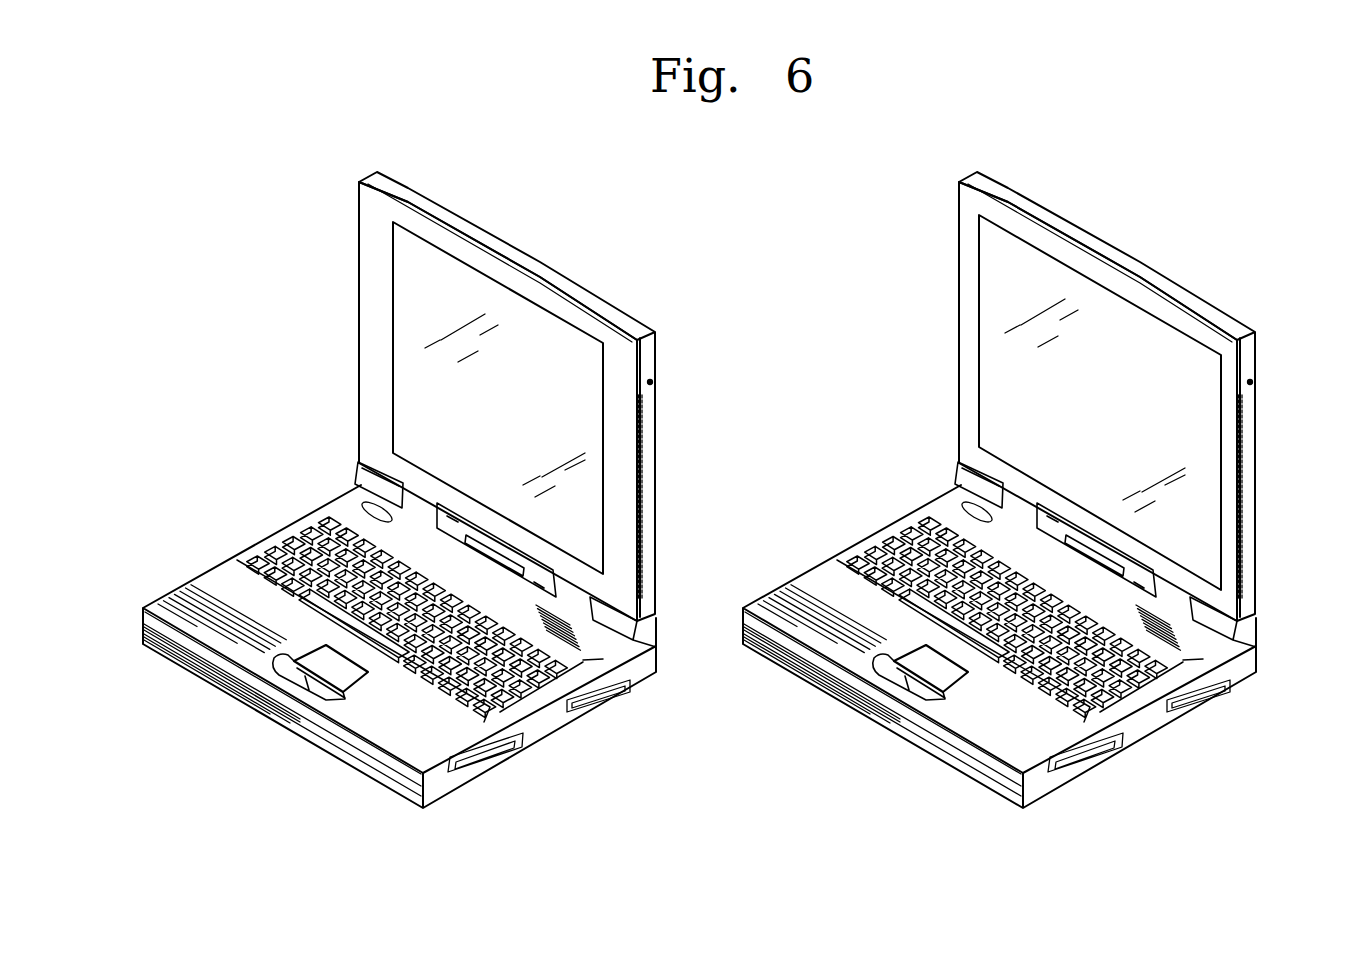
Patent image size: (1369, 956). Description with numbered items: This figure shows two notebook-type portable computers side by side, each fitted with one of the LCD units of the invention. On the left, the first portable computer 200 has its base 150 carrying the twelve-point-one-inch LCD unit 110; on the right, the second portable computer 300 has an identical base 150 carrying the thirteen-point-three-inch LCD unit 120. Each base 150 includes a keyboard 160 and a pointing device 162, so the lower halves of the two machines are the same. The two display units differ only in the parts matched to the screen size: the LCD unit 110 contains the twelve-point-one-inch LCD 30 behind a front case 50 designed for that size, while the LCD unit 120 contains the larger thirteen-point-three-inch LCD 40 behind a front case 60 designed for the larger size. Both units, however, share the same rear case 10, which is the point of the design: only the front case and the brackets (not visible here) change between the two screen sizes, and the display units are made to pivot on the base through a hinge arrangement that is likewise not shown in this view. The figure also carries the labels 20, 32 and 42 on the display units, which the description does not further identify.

The rear case 10 is at (652, 358).
The connecting portion 20 is at (652, 567).
The 12.1" LCD 30 is at (575, 353).
The first display screen 32 is at (460, 418).
The 13.3" LCD 40 is at (1175, 353).
The second display screen 42 is at (1072, 418).
The front case 50 is at (618, 338).
The front case 60 is at (1220, 338).
The 12.1" LCD unit 110 is at (508, 225).
The 13.3" LCD unit 120 is at (1108, 225).
The base 150 is at (225, 515).
The keyboard 160 is at (305, 530).
The pointing device 162 is at (363, 685).
The portable computer 200 is at (444, 381).
The portable computer 300 is at (1071, 381).